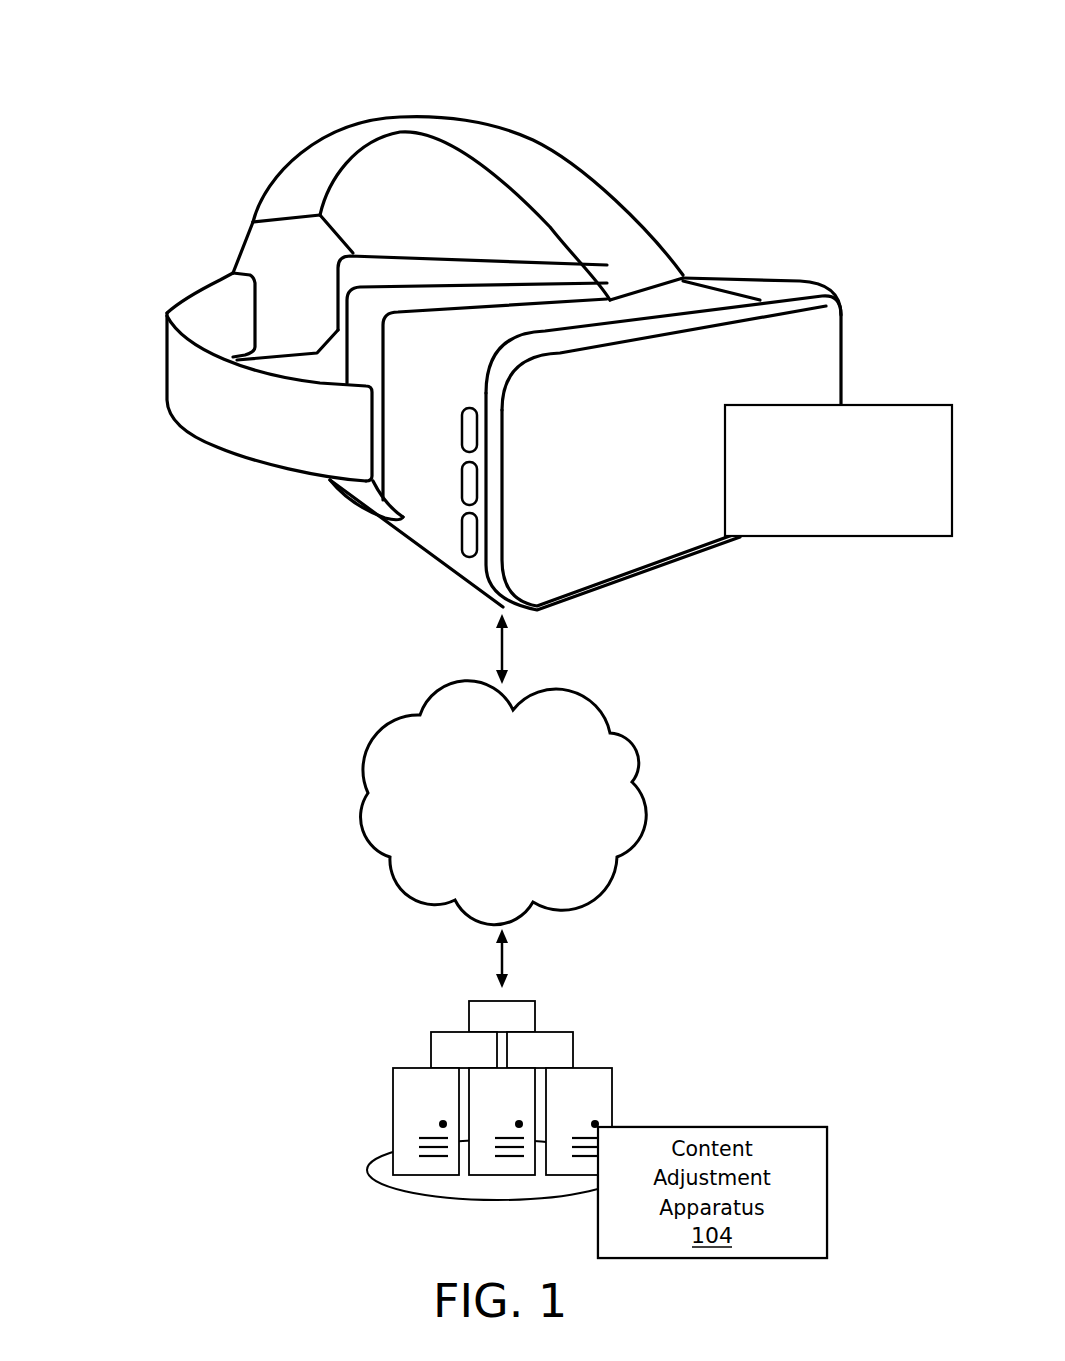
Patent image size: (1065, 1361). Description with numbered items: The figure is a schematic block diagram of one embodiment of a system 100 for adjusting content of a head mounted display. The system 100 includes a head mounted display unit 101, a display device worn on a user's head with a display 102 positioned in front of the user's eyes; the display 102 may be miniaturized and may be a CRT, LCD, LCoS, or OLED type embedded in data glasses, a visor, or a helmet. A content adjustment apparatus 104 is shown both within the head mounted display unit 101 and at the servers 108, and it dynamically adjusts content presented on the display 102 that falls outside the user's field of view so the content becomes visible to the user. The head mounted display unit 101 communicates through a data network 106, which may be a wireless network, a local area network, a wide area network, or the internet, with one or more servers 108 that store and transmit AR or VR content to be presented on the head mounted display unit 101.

The system 100 is at (100, 50).
The head mounted display unit 101 is at (208, 236).
The display 102 is at (641, 471).
The content adjustment apparatus 104 is at (818, 525).
The data network 106 is at (482, 833).
The servers 108 is at (393, 1077).